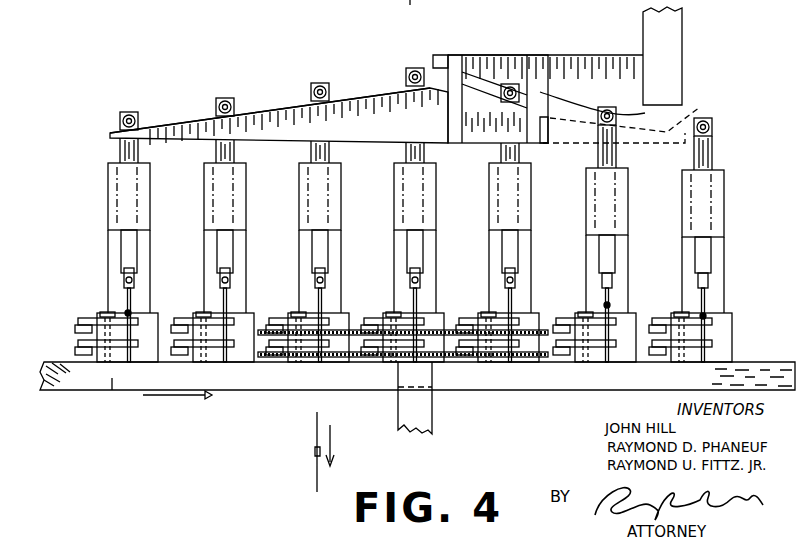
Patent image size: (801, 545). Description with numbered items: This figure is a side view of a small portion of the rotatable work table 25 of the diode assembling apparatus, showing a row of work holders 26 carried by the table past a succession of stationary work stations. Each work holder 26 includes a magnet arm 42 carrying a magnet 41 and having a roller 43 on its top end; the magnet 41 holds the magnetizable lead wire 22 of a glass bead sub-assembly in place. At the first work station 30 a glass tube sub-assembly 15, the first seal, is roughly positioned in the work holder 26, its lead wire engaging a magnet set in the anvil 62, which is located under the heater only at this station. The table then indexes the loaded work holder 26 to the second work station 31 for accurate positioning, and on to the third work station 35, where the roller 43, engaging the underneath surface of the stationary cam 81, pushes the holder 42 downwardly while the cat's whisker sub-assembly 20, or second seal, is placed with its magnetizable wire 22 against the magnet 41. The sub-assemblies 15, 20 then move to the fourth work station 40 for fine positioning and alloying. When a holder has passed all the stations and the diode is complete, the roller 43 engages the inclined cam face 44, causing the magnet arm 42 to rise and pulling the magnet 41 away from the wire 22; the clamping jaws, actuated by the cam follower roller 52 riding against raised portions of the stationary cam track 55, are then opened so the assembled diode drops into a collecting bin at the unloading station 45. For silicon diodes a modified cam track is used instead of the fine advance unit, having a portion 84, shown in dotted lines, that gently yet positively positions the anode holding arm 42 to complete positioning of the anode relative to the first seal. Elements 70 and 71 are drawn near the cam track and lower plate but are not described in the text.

The glass tube sub-assembly 15 is at (415, 320).
The cat's whisker sub-assembly 20 is at (606, 312).
The lead wire 22 is at (132, 295).
The rotatable work table 25 is at (120, 418).
The work holder 26 is at (108, 182).
The first work station 30 is at (400, 73).
The second work station 31 is at (494, 48).
The third work station 35 is at (597, 47).
The fourth work station 40 is at (719, 81).
The magnet 41 is at (126, 312).
The magnet arm 42 is at (122, 245).
The roller 43 is at (126, 114).
The inclined cam face 44 is at (196, 116).
The unloading station 45 is at (297, 73).
The cam follower roller 52 is at (80, 325).
The stationary cam track 55 is at (338, 358).
The anvil 62 is at (403, 418).
The threaded rod 70 is at (450, 357).
The plate 71 is at (83, 350).
The stationary cam 81 is at (575, 93).
The cam track portion 84 is at (633, 118).